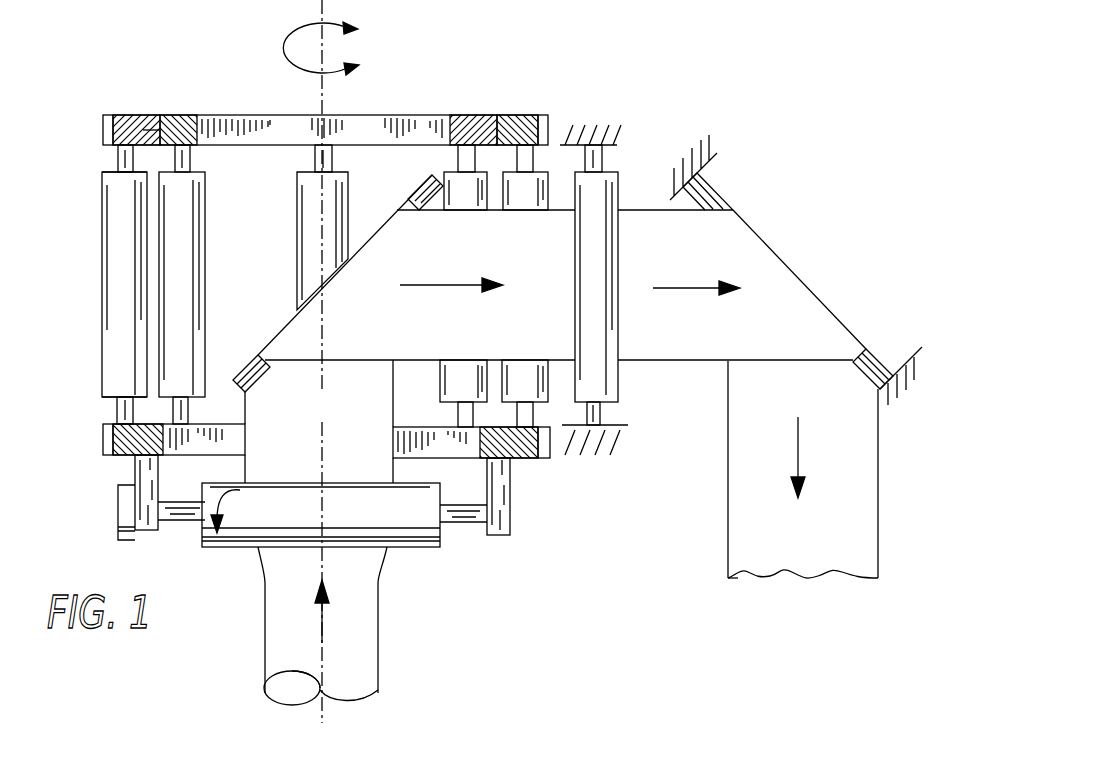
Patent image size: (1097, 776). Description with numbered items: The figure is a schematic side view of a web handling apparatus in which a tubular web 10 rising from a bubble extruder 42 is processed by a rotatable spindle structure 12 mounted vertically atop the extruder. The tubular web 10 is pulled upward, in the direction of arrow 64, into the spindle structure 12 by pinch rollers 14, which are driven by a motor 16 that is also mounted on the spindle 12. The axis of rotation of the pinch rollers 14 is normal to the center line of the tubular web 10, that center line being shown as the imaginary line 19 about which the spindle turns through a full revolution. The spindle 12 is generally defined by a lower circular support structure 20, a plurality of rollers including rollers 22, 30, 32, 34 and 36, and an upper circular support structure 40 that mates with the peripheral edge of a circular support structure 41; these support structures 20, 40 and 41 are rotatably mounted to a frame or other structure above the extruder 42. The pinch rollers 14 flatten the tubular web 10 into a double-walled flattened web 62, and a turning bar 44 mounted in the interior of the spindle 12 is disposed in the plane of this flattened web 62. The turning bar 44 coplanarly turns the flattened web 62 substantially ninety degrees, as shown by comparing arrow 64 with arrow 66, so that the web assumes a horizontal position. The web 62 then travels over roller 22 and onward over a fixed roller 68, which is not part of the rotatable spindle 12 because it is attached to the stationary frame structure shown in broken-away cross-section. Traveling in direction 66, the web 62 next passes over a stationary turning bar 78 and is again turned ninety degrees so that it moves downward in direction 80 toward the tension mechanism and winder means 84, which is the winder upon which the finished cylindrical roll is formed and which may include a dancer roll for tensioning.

The tubular web 10 is at (378, 675).
The rotatable spindle structure 12 is at (99, 251).
The pinch rollers 14 is at (245, 548).
The motor 16 is at (118, 542).
The imaginary line 19 is at (322, 60).
The lower circular support structure 20 is at (110, 457).
The roller 22 is at (533, 182).
The roller 30 is at (102, 203).
The roller 32 is at (182, 187).
The roller 34 is at (343, 173).
The roller 36 is at (433, 148).
The upper circular support structure 40 is at (107, 128).
The circular support structure 41 is at (413, 127).
The bubble extruder 42 is at (371, 716).
The turning bar 44 is at (240, 372).
The flattened web 62 is at (319, 421).
The arrow 64 is at (322, 640).
The arrow 66 is at (437, 288).
The fixed roller 68 is at (593, 183).
The stationary turning bar 78 is at (705, 180).
The direction 80 is at (800, 473).
The tension mechanism and winder means 84 is at (756, 625).